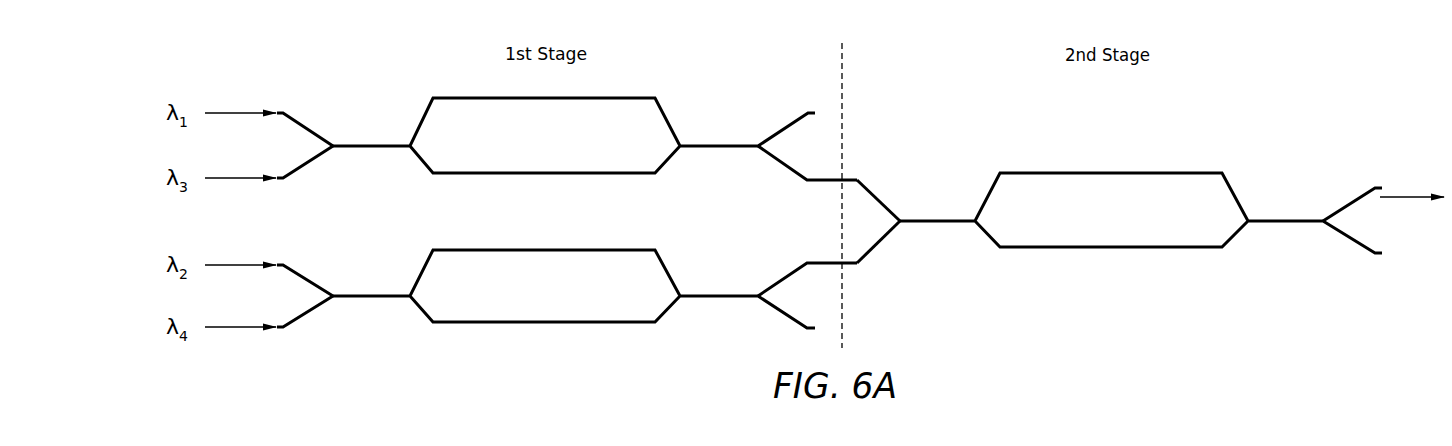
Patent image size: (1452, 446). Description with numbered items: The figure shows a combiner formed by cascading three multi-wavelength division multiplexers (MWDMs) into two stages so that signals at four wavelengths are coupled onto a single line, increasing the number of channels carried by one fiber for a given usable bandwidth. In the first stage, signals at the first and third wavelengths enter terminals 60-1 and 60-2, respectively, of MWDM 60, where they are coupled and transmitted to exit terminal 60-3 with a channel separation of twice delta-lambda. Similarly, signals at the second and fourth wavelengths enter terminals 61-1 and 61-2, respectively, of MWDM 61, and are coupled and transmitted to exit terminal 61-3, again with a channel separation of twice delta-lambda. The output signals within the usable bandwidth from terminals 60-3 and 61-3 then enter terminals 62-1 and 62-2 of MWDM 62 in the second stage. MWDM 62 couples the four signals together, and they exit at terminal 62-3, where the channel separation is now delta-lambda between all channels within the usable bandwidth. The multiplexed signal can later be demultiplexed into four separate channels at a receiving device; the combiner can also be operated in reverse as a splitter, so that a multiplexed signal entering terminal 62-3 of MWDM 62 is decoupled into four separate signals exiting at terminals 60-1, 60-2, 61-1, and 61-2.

The MWDM 60 is at (551, 192).
The terminal 60-1 is at (283, 112).
The terminal 60-2 is at (283, 179).
The exit terminal 60-3 is at (815, 184).
The MWDM 61 is at (551, 339).
The terminal 61-1 is at (283, 264).
The terminal 61-2 is at (283, 328).
The exit terminal 61-3 is at (815, 262).
The MWDM 62 is at (1127, 266).
The terminal 62-1 is at (855, 179).
The terminal 62-2 is at (855, 264).
The terminal 62-3 is at (1377, 187).